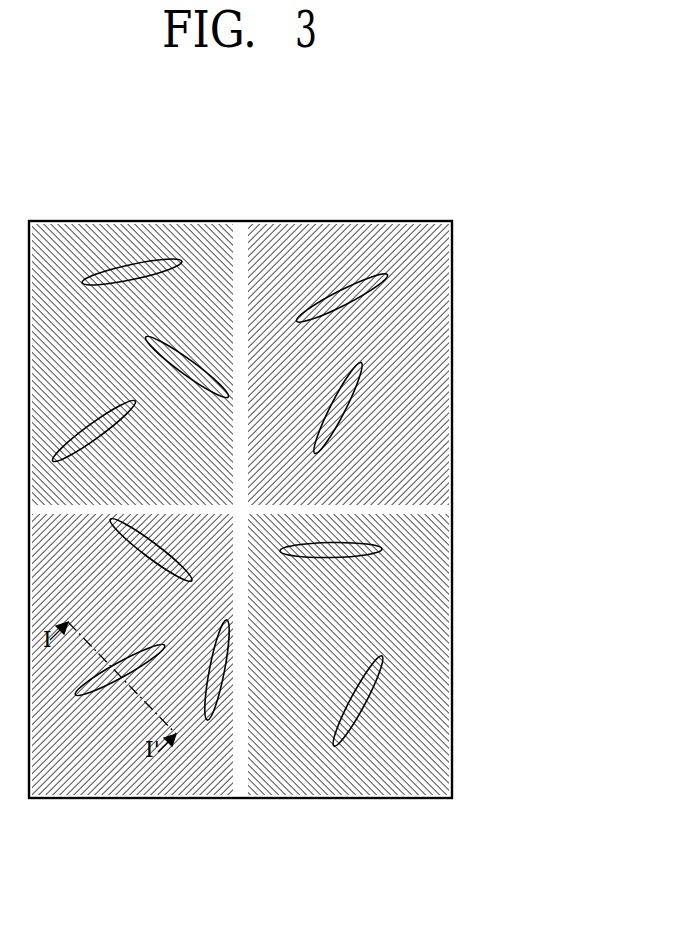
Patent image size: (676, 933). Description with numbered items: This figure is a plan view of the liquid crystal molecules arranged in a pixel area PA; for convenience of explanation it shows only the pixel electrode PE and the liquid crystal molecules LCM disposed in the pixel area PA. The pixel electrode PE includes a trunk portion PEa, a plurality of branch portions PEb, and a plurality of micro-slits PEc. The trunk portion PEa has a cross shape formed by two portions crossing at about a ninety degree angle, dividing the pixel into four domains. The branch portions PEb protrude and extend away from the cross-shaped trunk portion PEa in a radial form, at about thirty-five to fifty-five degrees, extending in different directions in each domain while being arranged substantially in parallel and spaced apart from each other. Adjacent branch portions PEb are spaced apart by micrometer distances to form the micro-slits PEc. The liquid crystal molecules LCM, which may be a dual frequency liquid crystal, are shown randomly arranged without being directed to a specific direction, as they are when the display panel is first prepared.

The pixel electrode PE is at (287, 509).
The trunk portion PEa is at (433, 513).
The branch portions PEb is at (433, 545).
The micro-slits PEc is at (240, 509).
The pixel area PA is at (286, 509).
The liquid crystal molecules LCM is at (355, 703).